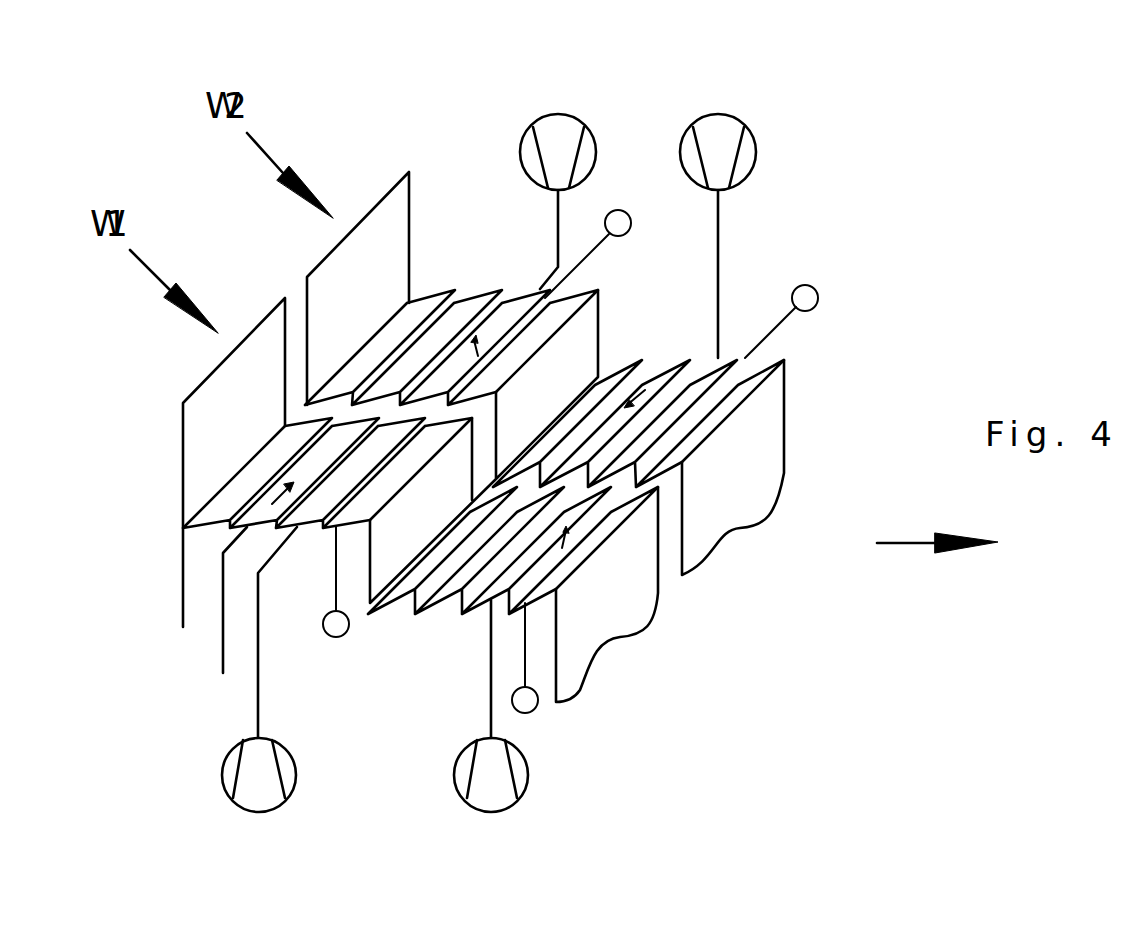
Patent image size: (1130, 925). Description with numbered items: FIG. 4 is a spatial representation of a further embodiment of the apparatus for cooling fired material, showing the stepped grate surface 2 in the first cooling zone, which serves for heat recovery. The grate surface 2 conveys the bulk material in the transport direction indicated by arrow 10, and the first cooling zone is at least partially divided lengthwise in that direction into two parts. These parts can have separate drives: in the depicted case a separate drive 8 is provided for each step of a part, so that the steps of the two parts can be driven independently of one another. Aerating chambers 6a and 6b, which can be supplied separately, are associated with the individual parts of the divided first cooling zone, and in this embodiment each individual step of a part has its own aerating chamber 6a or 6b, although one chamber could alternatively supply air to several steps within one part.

The grate surface 2 is at (673, 306).
The aerating chamber 6a is at (253, 807).
The aerating chamber 6b is at (532, 125).
The separate drive 8 is at (622, 210).
The arrow 10 is at (895, 543).